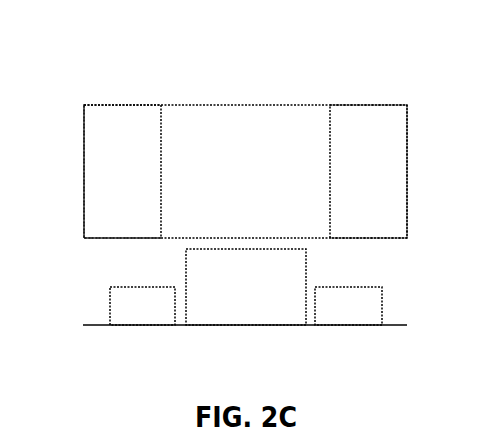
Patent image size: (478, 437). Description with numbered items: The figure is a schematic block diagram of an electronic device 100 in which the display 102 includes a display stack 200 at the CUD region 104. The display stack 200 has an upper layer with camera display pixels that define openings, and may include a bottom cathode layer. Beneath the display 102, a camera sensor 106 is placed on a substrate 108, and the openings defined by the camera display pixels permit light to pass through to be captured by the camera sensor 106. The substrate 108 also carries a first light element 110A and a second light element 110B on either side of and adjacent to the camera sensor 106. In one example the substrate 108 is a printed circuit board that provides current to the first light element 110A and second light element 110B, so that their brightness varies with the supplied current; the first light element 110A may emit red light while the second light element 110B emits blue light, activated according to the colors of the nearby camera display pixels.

The electronic device 100 is at (109, 58).
The display 102 is at (133, 105).
The CUD region 104 is at (304, 115).
The display stack 200 is at (245, 115).
The camera sensor 106 is at (245, 307).
The substrate 108 is at (393, 325).
The first light element 110A is at (110, 300).
The second light element 110B is at (384, 305).